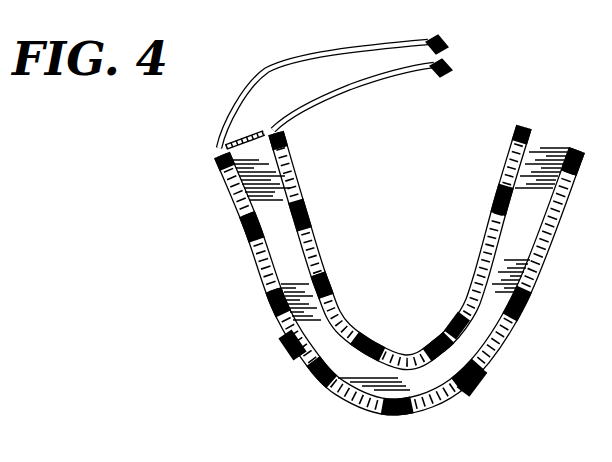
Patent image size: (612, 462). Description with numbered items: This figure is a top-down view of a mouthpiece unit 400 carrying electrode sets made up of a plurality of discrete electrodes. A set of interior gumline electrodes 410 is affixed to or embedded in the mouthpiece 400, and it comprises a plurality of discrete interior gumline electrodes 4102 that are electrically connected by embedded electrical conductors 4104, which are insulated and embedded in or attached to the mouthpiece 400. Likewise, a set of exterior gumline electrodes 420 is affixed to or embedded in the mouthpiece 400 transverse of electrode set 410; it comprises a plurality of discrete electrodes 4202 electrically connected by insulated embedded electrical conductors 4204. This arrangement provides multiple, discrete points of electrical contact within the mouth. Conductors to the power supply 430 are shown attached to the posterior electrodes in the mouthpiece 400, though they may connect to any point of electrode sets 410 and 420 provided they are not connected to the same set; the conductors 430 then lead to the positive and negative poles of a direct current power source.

The mouthpiece unit 400 is at (399, 294).
The set of interior gumline electrodes 410 is at (400, 244).
The set of exterior gumline electrodes 420 is at (399, 306).
The conductors to the power supply 430 is at (418, 29).
The discrete interior gumline electrode 4102 is at (324, 286).
The embedded electrical conductor 4104 is at (457, 326).
The discrete gumline electrode 4202 is at (477, 383).
The embedded electrical conductor 4204 is at (294, 346).